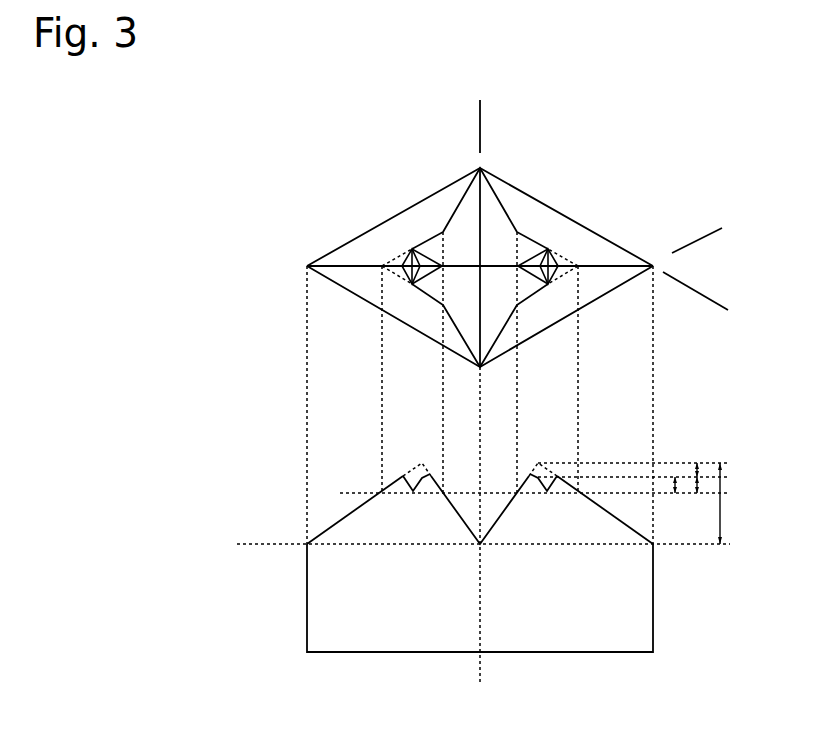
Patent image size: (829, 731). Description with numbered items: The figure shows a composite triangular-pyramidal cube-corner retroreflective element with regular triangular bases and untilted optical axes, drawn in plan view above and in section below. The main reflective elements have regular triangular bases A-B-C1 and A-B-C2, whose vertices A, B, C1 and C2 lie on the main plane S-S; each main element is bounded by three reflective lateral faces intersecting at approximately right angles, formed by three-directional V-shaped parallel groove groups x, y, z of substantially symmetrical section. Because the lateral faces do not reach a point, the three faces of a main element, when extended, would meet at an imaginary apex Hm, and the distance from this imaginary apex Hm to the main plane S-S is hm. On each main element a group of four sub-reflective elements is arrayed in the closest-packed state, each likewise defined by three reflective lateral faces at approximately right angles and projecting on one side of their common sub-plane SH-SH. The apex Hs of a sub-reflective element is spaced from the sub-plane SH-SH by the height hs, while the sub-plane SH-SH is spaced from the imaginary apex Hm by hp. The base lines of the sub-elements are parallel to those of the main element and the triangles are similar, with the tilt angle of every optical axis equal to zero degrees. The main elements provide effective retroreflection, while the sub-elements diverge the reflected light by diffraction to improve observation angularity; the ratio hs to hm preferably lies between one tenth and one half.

The V-shaped parallel groove group x is at (480, 108).
The V-shaped parallel groove group y is at (704, 231).
The V-shaped parallel groove group z is at (701, 300).
The base vertex A is at (480, 206).
The base vertex B is at (480, 328).
The base vertex C1 is at (664, 392).
The base vertex C2 is at (294, 394).
The main plane S is at (480, 546).
The common sub-plane SH is at (537, 492).
The imaginary apex Hm is at (628, 429).
The apex of sub-reflective element Hs is at (628, 457).
The sub-reflective element height hs is at (683, 460).
The distance from imaginary apex to sub-plane hp is at (690, 468).
The main reflective element height hm is at (721, 493).